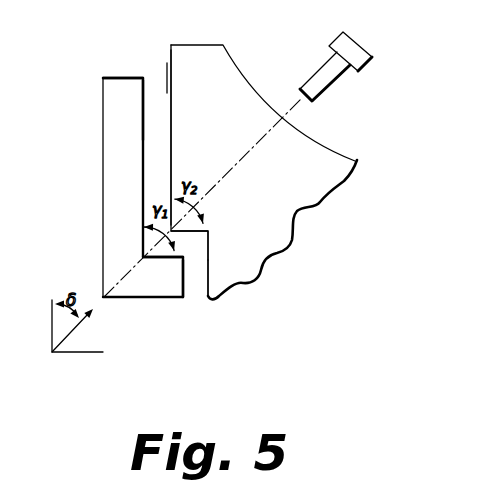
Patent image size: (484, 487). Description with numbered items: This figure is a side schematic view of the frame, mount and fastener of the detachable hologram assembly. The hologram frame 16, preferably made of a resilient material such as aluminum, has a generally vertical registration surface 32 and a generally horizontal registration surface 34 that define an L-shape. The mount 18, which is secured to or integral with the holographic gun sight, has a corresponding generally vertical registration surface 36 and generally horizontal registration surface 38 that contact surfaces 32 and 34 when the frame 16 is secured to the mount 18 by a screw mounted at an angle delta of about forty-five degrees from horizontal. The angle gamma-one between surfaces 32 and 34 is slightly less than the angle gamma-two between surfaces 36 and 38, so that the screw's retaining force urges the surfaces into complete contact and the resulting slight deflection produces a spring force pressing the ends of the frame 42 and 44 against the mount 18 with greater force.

The hologram frame 16 is at (120, 177).
The mount 18 is at (238, 66).
The generally vertical registration surface 32 is at (145, 87).
The generally horizontal registration surface 34 is at (158, 249).
The generally vertical registration surface 36 is at (173, 115).
The generally horizontal registration surface 38 is at (193, 232).
The end of the frame 42 is at (145, 101).
The end of the frame 44 is at (183, 253).